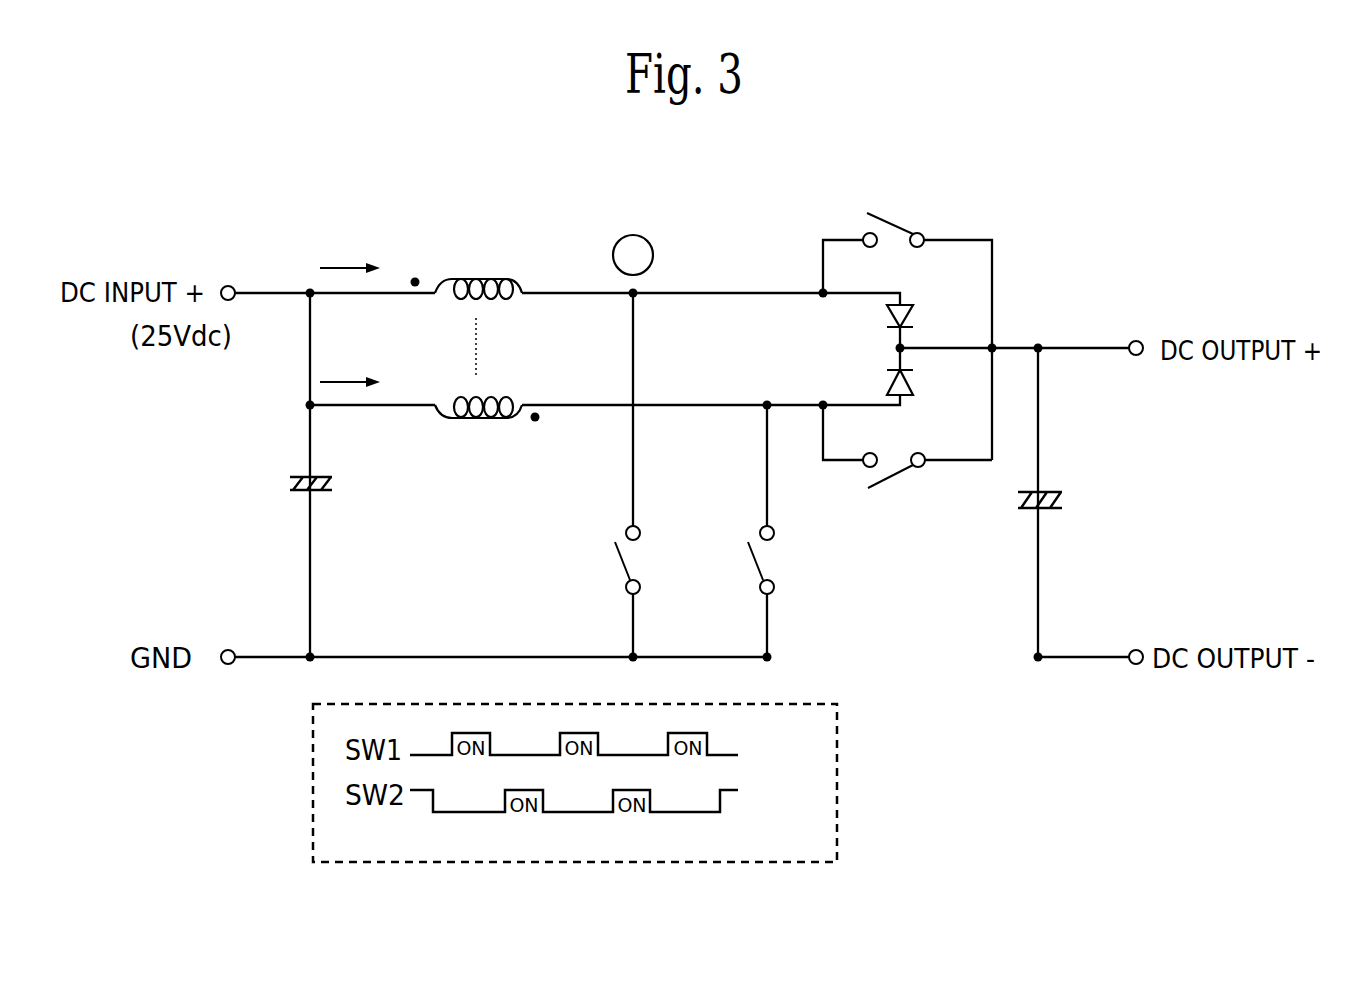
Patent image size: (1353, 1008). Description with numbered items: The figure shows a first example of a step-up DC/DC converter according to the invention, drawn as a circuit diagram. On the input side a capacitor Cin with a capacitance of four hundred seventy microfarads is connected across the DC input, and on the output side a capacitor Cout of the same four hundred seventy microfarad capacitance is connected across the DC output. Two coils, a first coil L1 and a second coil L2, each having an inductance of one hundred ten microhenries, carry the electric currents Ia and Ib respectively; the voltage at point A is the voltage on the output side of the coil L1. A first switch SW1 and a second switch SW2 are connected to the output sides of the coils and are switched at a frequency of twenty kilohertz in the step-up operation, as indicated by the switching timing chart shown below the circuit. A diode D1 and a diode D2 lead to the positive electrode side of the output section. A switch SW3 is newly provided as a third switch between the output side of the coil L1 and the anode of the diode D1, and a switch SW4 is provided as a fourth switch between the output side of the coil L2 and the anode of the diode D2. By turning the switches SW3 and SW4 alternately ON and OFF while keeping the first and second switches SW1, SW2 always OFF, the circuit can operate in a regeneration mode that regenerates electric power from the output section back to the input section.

The coil L1 is at (522, 259).
The coil L2 is at (522, 445).
The capacitor on the input side Cin is at (260, 483).
The capacitor on the output side Cout is at (1053, 501).
The diode D1 is at (921, 315).
The diode D2 is at (921, 387).
The first switch SW1 is at (594, 560).
The second switch SW2 is at (727, 560).
The third switch SW3 is at (896, 247).
The fourth switch SW4 is at (896, 454).
The point A is at (633, 255).
The electric current flowing in the coil L1 Ia is at (350, 255).
The electric current flowing in the coil L2 Ib is at (350, 369).